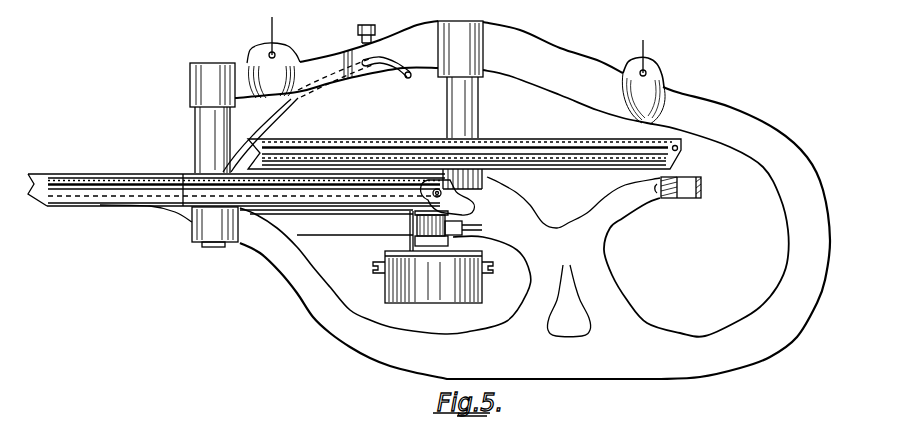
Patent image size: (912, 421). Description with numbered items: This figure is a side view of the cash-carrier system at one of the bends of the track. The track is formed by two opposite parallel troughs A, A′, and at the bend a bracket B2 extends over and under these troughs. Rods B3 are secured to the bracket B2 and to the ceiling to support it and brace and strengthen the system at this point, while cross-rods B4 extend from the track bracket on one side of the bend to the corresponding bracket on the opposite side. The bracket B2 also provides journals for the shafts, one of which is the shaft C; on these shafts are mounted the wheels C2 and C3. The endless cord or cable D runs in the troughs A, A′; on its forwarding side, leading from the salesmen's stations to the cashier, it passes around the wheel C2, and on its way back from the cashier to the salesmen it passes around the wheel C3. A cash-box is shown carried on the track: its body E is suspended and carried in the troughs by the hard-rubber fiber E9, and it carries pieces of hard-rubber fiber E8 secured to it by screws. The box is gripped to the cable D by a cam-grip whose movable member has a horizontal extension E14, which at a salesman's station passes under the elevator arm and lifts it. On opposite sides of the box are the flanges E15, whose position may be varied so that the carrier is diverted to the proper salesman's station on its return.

The bracket B2 is at (465, 200).
The rods B3 is at (274, 22).
The cross-rods B4 is at (283, 113).
The shaft C is at (447, 107).
The wheel C2 is at (352, 140).
The wheel C3 is at (338, 212).
The trough A is at (412, 224).
The trough A′ is at (702, 194).
The endless cord or cable D is at (447, 198).
The horizontal extension E14 is at (410, 228).
The hard-rubber fiber E9 is at (475, 223).
The hard-rubber fiber E8 is at (448, 246).
The body E is at (440, 306).
The flanges E15 is at (502, 276).